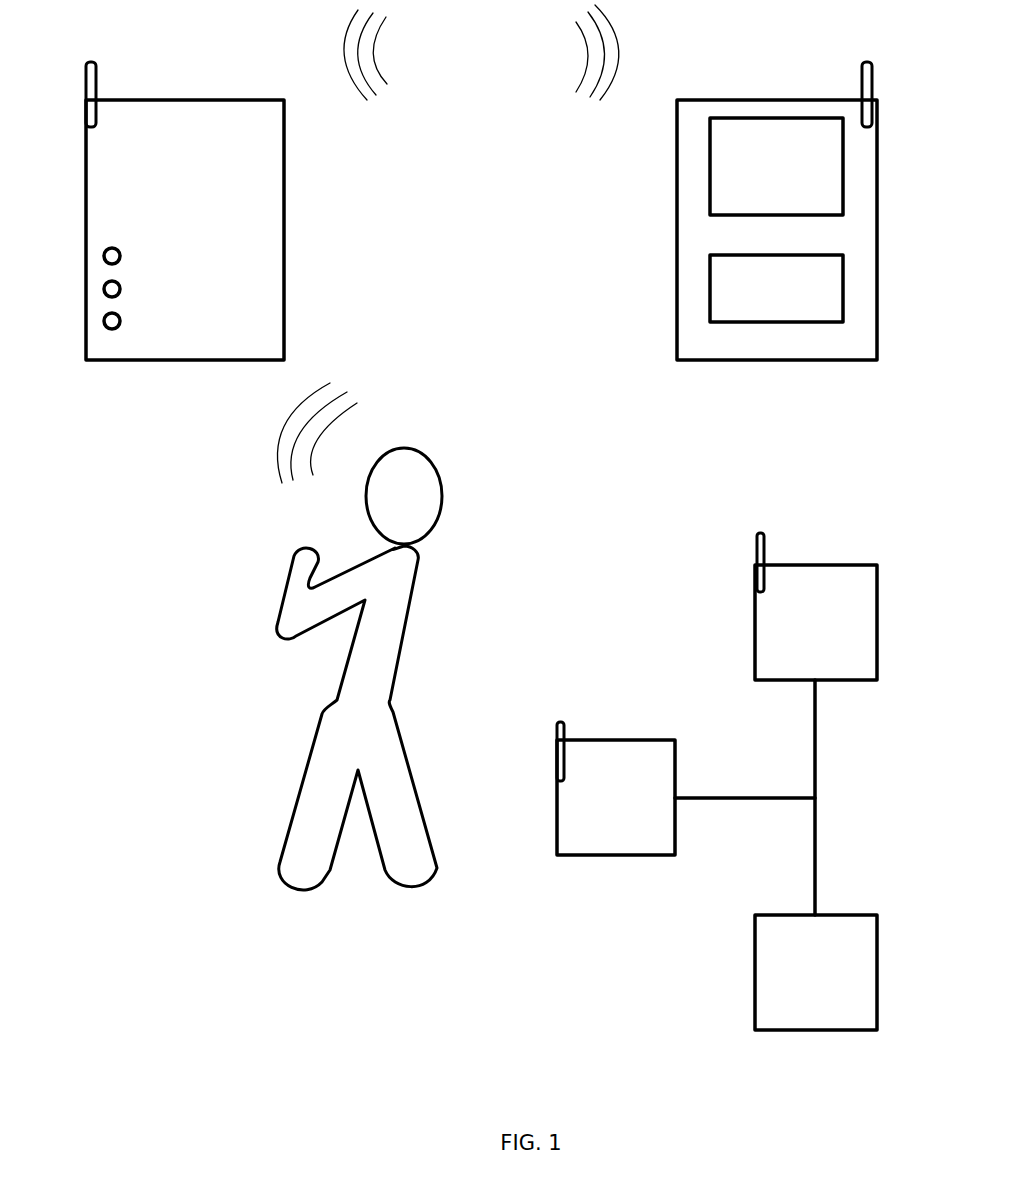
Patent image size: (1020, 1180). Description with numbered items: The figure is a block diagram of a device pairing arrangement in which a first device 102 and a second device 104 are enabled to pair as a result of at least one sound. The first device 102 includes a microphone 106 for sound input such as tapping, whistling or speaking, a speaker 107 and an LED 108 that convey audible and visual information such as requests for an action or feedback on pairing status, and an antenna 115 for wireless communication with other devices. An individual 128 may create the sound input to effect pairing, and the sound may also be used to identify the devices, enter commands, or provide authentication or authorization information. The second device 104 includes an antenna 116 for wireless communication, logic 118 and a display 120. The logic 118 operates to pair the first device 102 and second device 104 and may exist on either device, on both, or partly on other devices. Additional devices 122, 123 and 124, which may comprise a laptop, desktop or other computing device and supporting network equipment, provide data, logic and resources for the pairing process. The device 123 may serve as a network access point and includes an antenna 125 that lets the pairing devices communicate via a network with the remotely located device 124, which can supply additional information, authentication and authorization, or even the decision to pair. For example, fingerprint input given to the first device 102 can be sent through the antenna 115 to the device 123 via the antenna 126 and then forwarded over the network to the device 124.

The first device 102 is at (204, 363).
The second device 104 is at (792, 363).
The microphone 106 is at (91, 270).
The speaker 107 is at (91, 303).
The LED 108 is at (91, 335).
The antenna 115 is at (88, 62).
The antenna 116 is at (866, 62).
The logic 118 is at (758, 300).
The display 120 is at (758, 178).
The device 122 is at (752, 630).
The device 123 is at (630, 858).
The device 124 is at (835, 1033).
The antenna 125 is at (758, 532).
The antenna 126 is at (558, 720).
The individual 128 is at (314, 722).